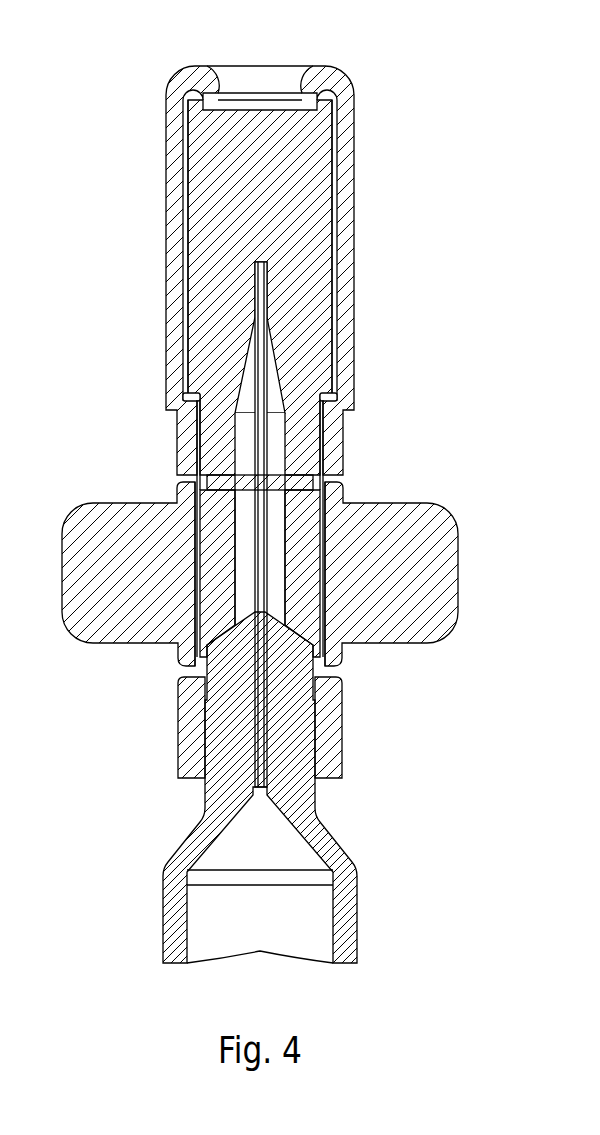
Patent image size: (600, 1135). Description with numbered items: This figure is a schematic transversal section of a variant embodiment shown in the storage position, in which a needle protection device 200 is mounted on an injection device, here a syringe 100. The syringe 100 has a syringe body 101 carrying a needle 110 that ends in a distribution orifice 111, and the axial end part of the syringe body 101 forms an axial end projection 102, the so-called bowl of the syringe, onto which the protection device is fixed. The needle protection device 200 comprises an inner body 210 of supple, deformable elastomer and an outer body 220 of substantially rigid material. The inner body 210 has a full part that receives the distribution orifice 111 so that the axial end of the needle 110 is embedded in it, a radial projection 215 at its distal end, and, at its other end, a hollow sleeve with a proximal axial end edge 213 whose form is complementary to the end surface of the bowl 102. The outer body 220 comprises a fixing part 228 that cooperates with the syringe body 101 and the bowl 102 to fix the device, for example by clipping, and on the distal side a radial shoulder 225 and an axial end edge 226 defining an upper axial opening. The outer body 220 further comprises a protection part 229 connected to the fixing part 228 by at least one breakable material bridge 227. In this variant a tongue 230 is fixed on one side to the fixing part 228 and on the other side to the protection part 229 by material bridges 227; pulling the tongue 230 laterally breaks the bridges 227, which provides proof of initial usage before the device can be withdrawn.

The syringe 100 is at (256, 787).
The syringe body 101 is at (176, 920).
The axial end projection 102 is at (192, 688).
The needle 110 is at (349, 512).
The distribution orifice 111 is at (263, 261).
The needle protection device 200 is at (256, 241).
The inner body 210 is at (191, 274).
The proximal axial end edge 213 is at (303, 618).
The radial projection 215 is at (223, 143).
The outer body 220 is at (352, 236).
The radial shoulder 225 is at (326, 399).
The axial end edge 226 is at (195, 75).
The breakable material bridge 227 is at (198, 662).
The fixing part 228 is at (320, 708).
The protection part 229 is at (176, 287).
The tongue 230 is at (118, 587).